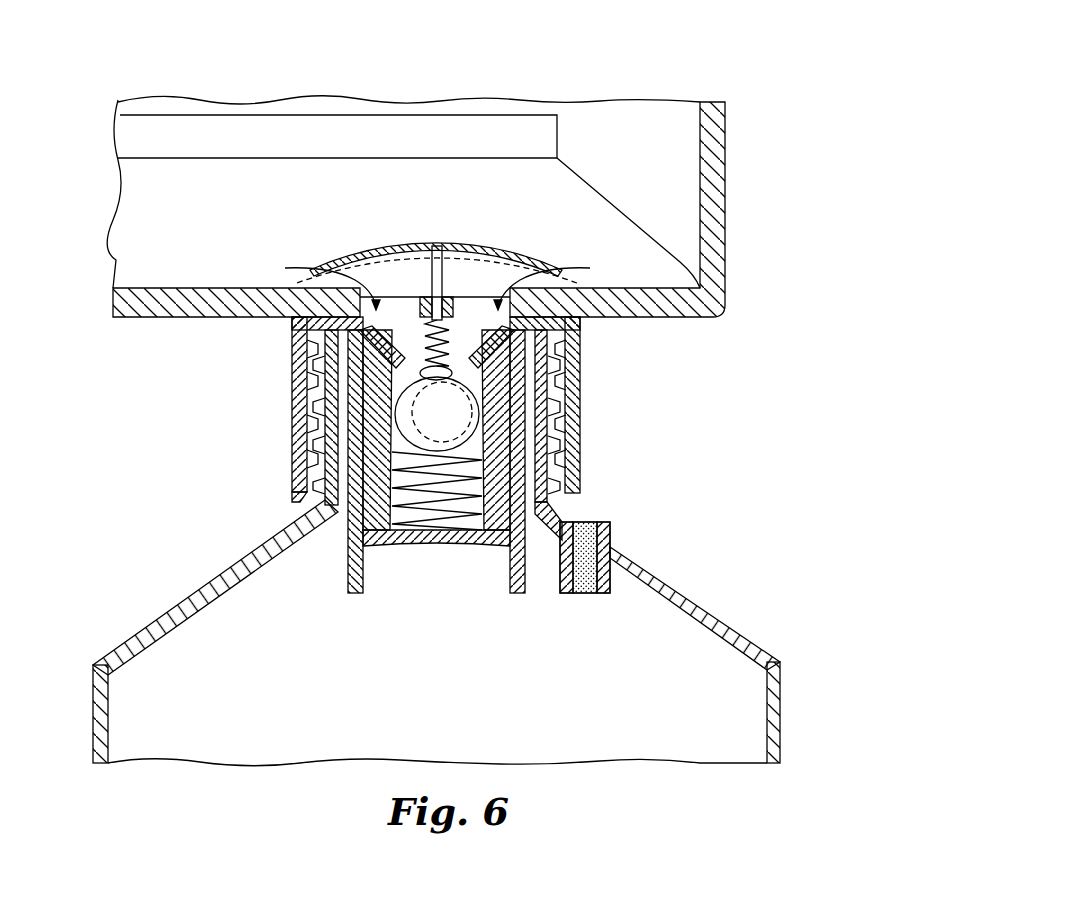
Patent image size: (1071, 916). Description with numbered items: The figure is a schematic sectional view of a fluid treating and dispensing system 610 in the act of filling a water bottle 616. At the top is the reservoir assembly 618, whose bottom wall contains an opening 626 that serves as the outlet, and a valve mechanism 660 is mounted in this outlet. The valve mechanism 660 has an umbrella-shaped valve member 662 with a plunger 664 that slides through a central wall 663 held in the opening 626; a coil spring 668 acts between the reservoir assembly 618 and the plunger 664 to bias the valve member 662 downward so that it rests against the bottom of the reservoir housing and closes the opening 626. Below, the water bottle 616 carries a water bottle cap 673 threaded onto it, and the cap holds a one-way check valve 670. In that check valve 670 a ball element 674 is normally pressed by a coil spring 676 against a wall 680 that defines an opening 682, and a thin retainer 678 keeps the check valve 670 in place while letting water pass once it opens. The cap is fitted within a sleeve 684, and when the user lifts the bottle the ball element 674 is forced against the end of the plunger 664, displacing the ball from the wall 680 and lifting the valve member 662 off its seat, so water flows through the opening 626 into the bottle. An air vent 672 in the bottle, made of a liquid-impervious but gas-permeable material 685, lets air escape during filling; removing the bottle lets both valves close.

The fluid treating and dispensing system 610 is at (625, 80).
The water bottle 616 is at (172, 625).
The reservoir assembly 618 is at (724, 197).
The opening 626 is at (478, 300).
The valve mechanism 660 is at (556, 248).
The umbrella-shaped valve member 662 is at (330, 268).
The central wall 663 is at (428, 366).
The plunger 664 is at (440, 292).
The coil spring 668 is at (420, 352).
The one-way check valve 670 is at (505, 474).
The air vent 672 is at (598, 546).
The water bottle cap 673 is at (556, 372).
The ball element 674 is at (345, 394).
The coil spring 676 is at (462, 530).
The retainer 678 is at (393, 542).
The wall 680 is at (312, 366).
The opening 682 is at (548, 336).
The sleeve 684 is at (298, 495).
The material 685 is at (585, 595).